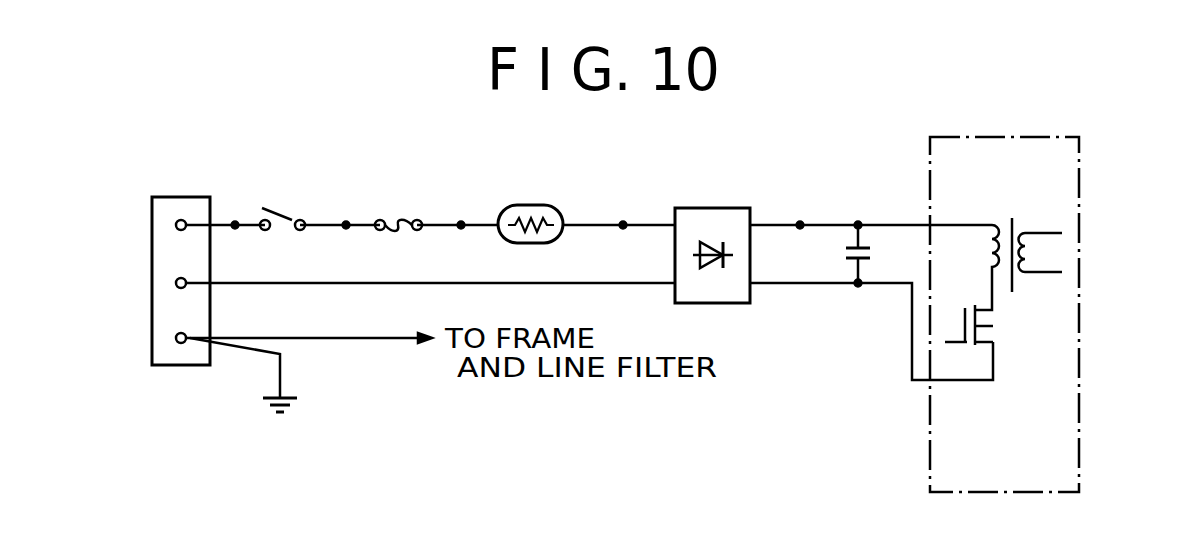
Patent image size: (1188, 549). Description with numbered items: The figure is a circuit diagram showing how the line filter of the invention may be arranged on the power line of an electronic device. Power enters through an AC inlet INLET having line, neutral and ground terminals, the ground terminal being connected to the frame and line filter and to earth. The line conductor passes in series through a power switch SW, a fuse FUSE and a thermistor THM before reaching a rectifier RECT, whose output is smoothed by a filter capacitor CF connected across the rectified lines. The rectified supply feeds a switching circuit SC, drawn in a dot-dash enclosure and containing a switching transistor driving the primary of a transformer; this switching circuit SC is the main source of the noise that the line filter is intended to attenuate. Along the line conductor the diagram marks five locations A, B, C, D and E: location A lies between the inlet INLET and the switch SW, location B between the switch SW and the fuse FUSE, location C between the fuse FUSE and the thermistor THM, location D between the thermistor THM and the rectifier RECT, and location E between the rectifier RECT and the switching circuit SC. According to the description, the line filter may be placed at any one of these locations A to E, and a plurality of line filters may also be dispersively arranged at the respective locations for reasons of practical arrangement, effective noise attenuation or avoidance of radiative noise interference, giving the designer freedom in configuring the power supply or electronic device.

The AC inlet connector INLET is at (163, 253).
The power switch SW is at (282, 204).
The fuse FUSE is at (397, 204).
The thermistor THM is at (529, 206).
The rectifier RECT is at (712, 236).
The filter capacitor CF is at (879, 254).
The switching circuit SC is at (1079, 182).
The location A is at (235, 225).
The location B is at (346, 225).
The location C is at (461, 225).
The location D is at (623, 225).
The location E is at (800, 225).